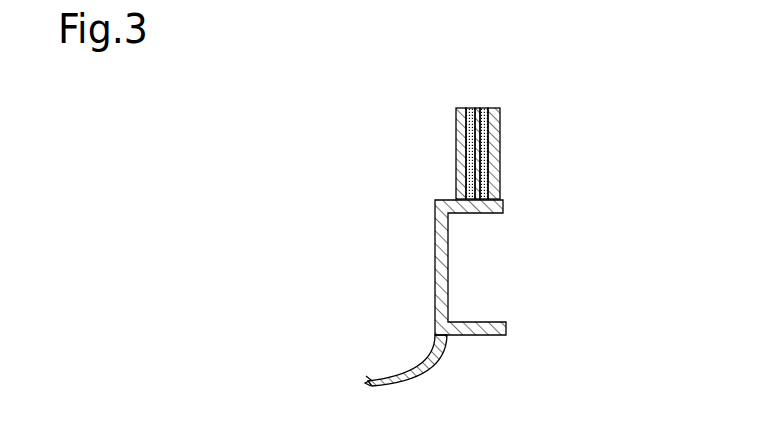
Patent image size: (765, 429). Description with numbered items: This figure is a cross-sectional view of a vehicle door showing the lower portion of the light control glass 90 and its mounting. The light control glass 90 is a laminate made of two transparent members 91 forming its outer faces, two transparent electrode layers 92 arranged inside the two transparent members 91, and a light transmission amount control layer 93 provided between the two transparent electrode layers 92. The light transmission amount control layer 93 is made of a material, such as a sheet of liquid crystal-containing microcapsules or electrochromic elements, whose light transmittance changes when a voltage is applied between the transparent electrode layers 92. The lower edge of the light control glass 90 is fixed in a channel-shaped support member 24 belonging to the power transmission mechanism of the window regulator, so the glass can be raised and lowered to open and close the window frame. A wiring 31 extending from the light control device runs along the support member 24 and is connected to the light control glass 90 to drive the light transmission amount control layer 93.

The support member 24 is at (493, 337).
The wiring 31 is at (398, 374).
The light control glass 90 is at (519, 148).
The transparent member 91 is at (466, 134).
The transparent electrode layer 92 is at (466, 178).
The light transmission amount control layer 93 is at (478, 184).